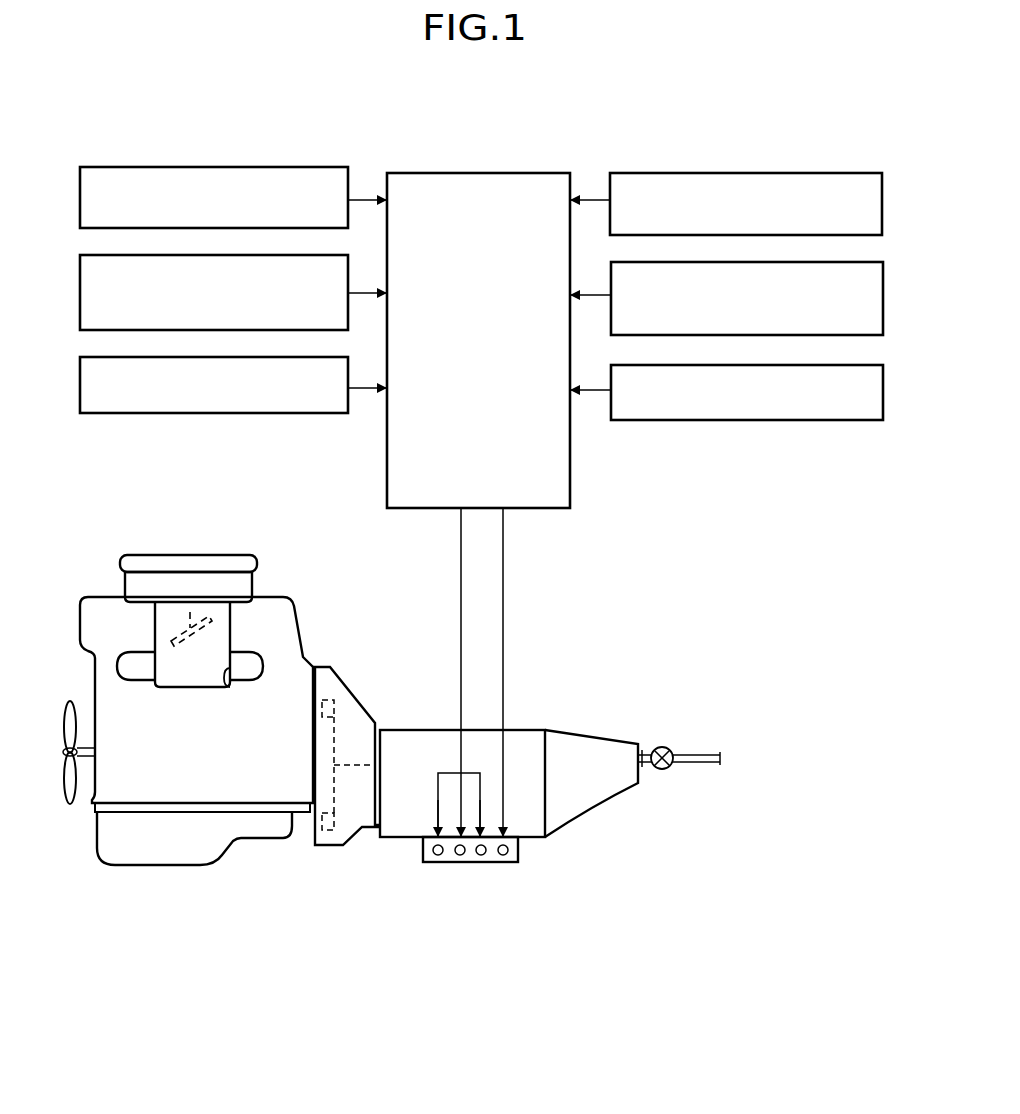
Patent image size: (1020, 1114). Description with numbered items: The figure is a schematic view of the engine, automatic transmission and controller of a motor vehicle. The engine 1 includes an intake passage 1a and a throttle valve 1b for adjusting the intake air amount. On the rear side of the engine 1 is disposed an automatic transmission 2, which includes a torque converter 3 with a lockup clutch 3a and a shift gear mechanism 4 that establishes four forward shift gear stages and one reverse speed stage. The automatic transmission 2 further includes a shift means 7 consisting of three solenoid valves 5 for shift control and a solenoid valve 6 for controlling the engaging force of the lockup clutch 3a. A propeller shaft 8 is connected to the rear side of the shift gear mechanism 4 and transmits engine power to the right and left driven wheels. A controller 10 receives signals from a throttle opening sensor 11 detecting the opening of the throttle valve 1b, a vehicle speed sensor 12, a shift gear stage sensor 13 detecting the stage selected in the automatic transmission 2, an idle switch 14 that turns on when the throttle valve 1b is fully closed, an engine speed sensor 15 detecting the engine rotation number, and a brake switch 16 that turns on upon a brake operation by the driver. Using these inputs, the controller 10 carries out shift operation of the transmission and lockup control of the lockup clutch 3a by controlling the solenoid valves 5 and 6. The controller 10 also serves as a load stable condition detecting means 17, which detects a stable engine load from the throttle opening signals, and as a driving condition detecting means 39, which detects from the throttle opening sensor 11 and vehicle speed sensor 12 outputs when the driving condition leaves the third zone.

The engine 1 is at (188, 669).
The intake passage 1a is at (228, 690).
The throttle valve 1b is at (188, 605).
The automatic transmission 2 is at (421, 700).
The torque converter 3 is at (346, 760).
The lockup clutch 3a is at (326, 832).
The shift gear mechanism 4 is at (530, 729).
The solenoid valves 5 is at (460, 856).
The solenoid valve 6 is at (503, 856).
The shift means 7 is at (470, 908).
The propeller shaft 8 is at (697, 752).
The controller 10 is at (539, 504).
The throttle opening sensor 11 is at (751, 173).
The vehicle speed sensor 12 is at (611, 284).
The shift gear stage sensor 13 is at (735, 420).
The idle switch 14 is at (226, 167).
The engine speed sensor 15 is at (80, 279).
The brake switch 16 is at (80, 387).
The load stable condition detecting means 17 is at (539, 504).
The driving condition detecting means 39 is at (553, 508).